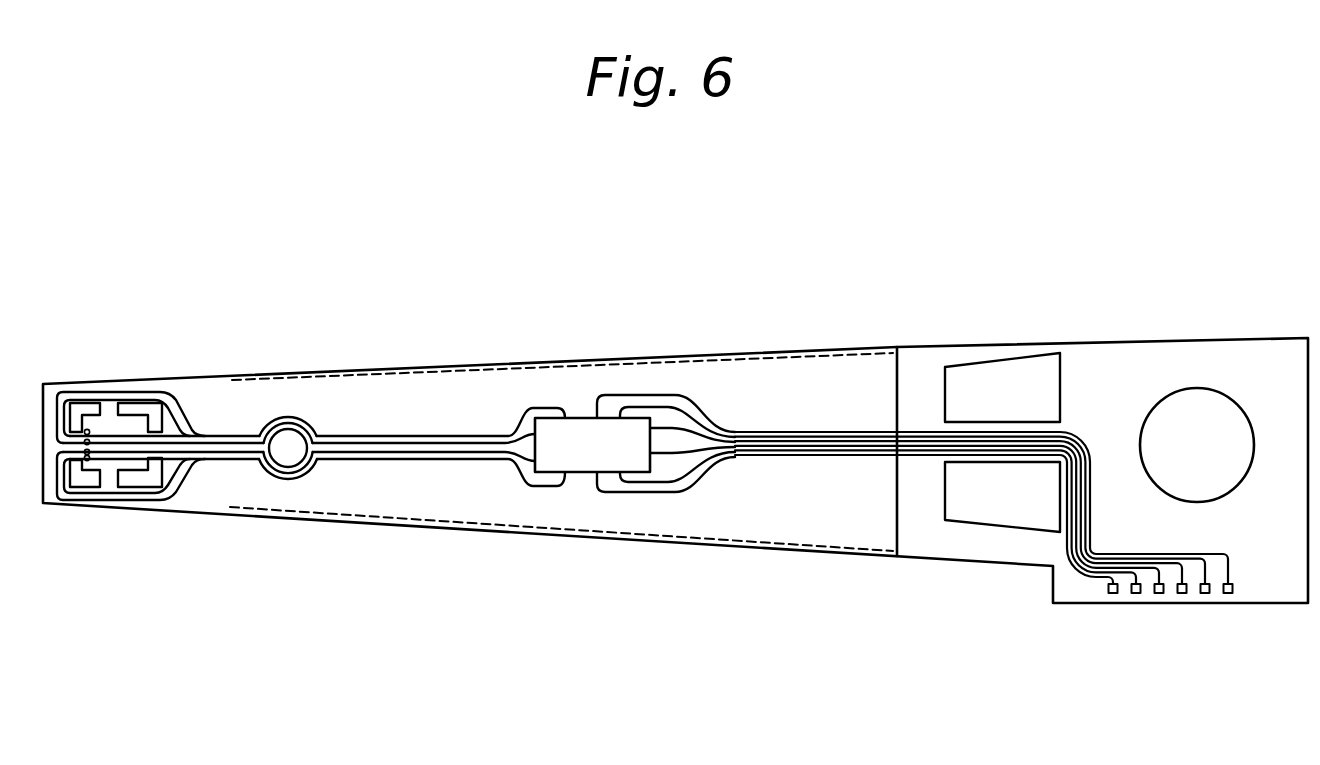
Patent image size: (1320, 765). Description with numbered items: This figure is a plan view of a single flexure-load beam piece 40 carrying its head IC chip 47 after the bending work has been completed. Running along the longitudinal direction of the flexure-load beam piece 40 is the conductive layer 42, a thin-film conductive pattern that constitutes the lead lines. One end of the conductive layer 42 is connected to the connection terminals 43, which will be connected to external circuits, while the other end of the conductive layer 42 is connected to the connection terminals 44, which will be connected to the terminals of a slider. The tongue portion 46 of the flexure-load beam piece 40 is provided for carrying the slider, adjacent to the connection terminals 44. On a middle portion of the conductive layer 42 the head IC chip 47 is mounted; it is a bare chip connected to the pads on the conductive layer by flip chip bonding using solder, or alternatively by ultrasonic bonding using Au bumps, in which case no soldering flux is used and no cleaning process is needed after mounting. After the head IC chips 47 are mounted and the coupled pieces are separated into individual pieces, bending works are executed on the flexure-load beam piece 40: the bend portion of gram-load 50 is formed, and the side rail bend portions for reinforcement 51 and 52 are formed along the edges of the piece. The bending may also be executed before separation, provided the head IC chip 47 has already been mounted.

The flexure-load beam piece 40 is at (870, 368).
The conductive layer 42 is at (424, 459).
The connection terminals 43 is at (1228, 593).
The connection terminals 44 is at (90, 433).
The tongue portion 46 is at (138, 430).
The head IC chip 47 is at (580, 432).
The bend portion of gram-load 50 is at (897, 363).
The side rail bend portion for reinforcement 51 is at (733, 360).
The side rail bend portion for reinforcement 52 is at (672, 538).